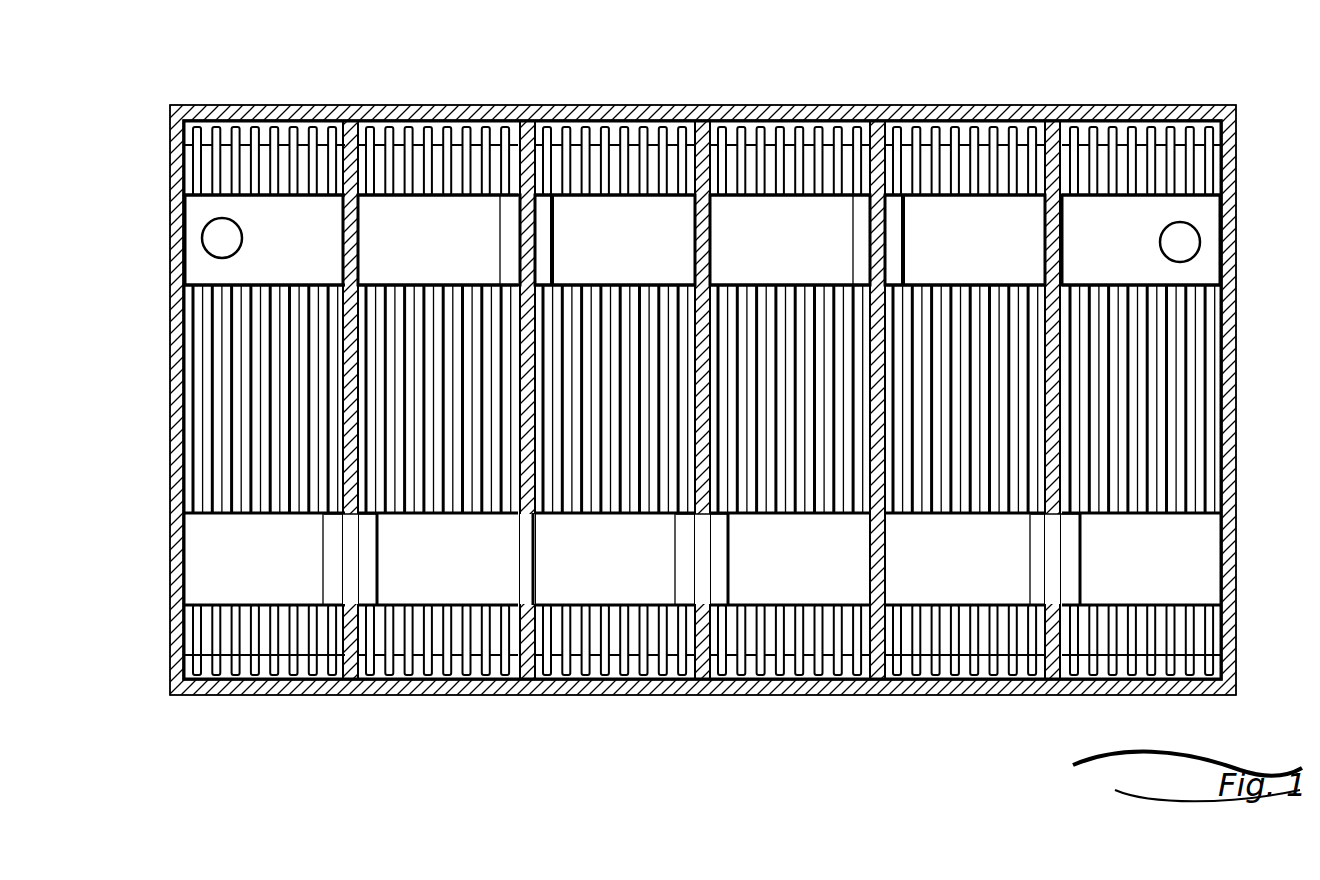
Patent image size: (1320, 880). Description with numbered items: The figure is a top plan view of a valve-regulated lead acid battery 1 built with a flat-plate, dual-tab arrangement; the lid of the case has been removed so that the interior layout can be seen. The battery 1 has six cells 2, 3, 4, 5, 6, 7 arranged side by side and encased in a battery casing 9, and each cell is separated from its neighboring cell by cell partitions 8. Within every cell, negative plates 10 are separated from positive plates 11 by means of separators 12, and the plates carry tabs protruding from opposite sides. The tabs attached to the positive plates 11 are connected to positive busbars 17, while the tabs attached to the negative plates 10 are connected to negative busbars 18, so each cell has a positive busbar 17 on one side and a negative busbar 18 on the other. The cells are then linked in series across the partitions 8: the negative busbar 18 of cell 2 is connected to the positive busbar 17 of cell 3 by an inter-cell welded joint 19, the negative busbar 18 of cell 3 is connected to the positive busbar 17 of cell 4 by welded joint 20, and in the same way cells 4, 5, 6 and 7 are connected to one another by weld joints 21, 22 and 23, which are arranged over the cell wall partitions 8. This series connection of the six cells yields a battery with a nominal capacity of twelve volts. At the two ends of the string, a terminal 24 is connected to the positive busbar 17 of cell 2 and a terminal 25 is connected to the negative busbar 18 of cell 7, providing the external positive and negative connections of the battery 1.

The valve-regulated lead acid battery 1 is at (301, 67).
The battery casing 9 is at (245, 105).
The cell 2 is at (306, 96).
The cell 3 is at (484, 96).
The cell 4 is at (659, 96).
The cell 5 is at (834, 96).
The cell 6 is at (1011, 96).
The cell 7 is at (1183, 96).
The cell partition 8 is at (362, 107).
The positive busbar 17 is at (628, 107).
The negative busbar 18 is at (453, 107).
The welded joint 20 is at (563, 107).
The weld joint 22 is at (913, 107).
The terminal 24 is at (212, 232).
The terminal 25 is at (1183, 238).
The inter-cell welded joint 19 is at (347, 593).
The weld joint 21 is at (687, 590).
The weld joint 23 is at (1070, 595).
The negative plate 10 is at (300, 645).
The positive plate 11 is at (1150, 650).
The separator 12 is at (985, 650).